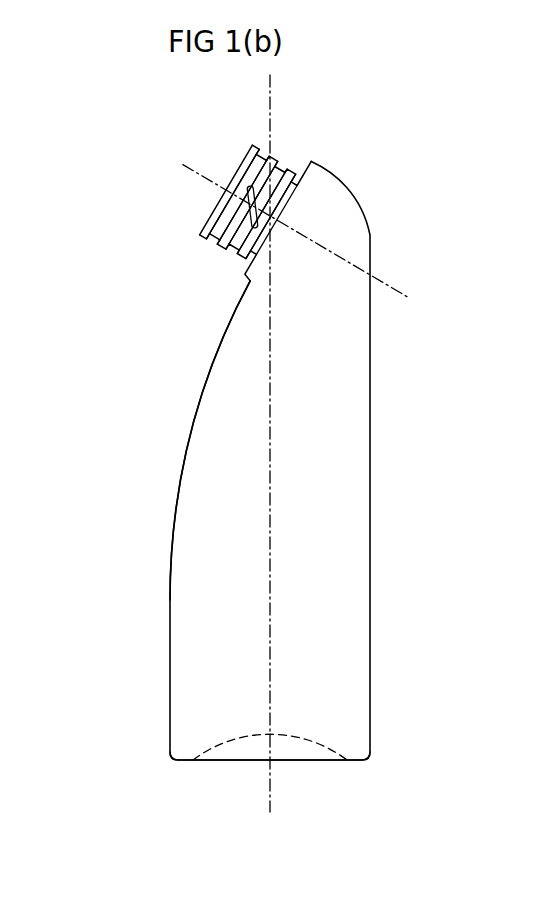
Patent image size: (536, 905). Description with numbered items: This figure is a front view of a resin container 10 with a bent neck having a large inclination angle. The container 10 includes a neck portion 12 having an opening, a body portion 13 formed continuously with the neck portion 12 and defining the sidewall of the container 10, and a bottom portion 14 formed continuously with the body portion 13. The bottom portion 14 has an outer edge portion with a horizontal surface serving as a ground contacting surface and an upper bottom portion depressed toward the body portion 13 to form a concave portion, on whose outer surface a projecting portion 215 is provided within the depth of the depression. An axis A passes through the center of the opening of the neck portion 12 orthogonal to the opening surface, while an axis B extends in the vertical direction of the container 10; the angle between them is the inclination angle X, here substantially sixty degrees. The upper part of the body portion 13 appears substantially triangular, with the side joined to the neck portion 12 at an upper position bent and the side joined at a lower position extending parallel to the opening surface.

The container 10 is at (384, 465).
The neck portion 12 is at (226, 250).
The body portion 13 is at (187, 573).
The bottom portion 14 is at (183, 762).
The projecting portion 215 is at (273, 738).
The axis A is at (393, 289).
The axis B is at (273, 582).
The inclination angle X is at (293, 238).